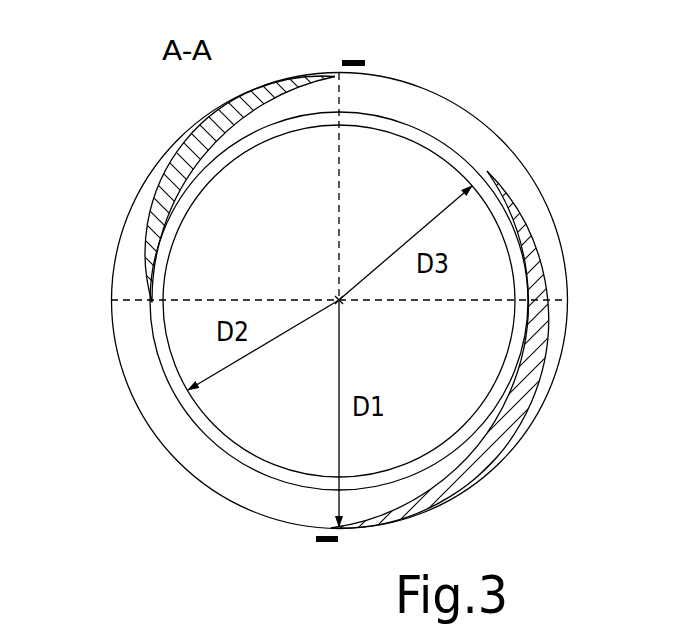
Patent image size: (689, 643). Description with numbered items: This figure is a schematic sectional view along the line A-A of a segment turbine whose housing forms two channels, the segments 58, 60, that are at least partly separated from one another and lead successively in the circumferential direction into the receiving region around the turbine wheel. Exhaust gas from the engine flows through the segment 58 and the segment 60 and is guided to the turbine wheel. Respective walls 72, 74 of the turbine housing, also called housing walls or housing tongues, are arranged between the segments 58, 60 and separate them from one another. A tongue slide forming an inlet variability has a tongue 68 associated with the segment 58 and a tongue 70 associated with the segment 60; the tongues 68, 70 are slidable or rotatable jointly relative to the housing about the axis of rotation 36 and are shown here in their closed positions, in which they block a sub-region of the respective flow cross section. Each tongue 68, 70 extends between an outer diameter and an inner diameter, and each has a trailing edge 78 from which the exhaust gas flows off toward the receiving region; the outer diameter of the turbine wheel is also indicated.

The axis of rotation 36 is at (344, 304).
The segment 58 is at (454, 84).
The segment 60 is at (198, 504).
The tongue 68 is at (247, 95).
The tongue 70 is at (522, 425).
The wall 72 is at (360, 58).
The wall 74 is at (325, 546).
The trailing edge 78 is at (487, 172).